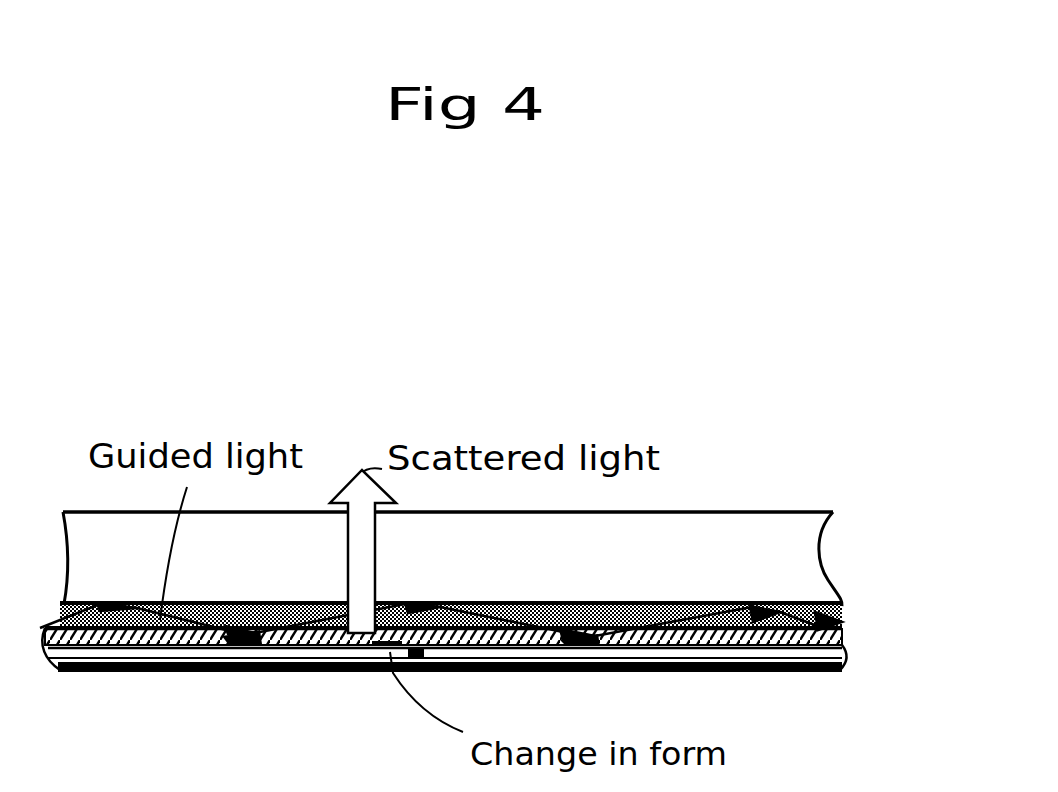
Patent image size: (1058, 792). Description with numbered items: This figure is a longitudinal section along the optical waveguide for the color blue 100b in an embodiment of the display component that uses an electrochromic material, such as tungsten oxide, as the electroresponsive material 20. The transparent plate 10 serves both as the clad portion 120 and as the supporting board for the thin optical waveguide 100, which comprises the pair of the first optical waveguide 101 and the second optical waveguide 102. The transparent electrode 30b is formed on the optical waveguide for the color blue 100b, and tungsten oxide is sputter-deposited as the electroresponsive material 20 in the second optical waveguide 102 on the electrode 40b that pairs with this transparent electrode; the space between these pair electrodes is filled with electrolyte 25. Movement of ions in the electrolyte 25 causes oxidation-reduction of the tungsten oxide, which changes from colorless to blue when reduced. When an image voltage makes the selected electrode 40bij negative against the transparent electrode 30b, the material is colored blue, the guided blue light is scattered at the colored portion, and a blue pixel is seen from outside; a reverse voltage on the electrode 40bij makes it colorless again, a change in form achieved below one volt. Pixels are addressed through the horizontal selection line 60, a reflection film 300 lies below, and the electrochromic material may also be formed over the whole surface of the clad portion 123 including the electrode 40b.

The plate 10 is at (638, 537).
The clad portion 120 is at (752, 535).
The transparent electrode 30b is at (463, 602).
The first optical waveguide 101 is at (195, 600).
The second optical waveguide 102 is at (273, 602).
The optical waveguide 100 is at (835, 631).
The optical waveguide for the color blue 100b is at (630, 600).
The electrode 40b is at (193, 648).
The selected electrode 40bij is at (362, 667).
The electroresponsive material 20 is at (140, 653).
The electrolyte 25 is at (83, 650).
The horizontal selection line 60 is at (420, 655).
The reflection film 300 is at (612, 672).
The clad portion 123 is at (717, 665).